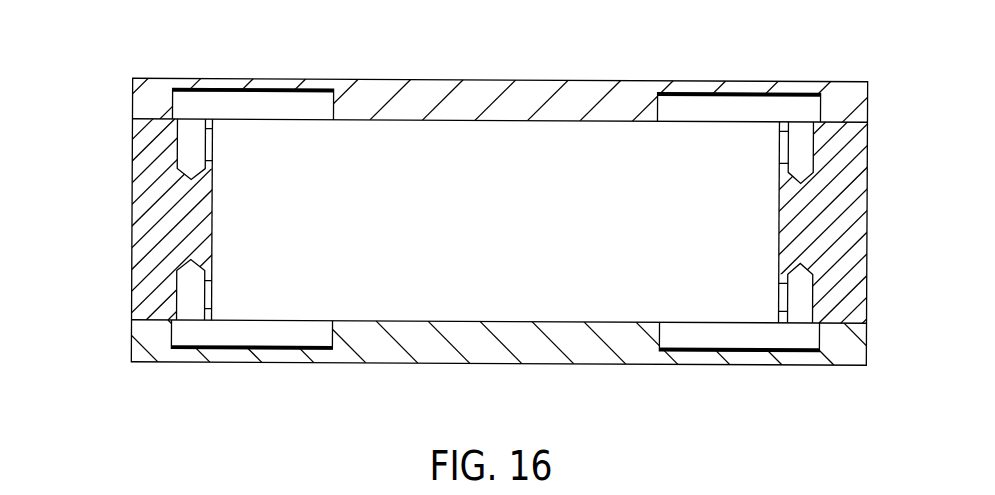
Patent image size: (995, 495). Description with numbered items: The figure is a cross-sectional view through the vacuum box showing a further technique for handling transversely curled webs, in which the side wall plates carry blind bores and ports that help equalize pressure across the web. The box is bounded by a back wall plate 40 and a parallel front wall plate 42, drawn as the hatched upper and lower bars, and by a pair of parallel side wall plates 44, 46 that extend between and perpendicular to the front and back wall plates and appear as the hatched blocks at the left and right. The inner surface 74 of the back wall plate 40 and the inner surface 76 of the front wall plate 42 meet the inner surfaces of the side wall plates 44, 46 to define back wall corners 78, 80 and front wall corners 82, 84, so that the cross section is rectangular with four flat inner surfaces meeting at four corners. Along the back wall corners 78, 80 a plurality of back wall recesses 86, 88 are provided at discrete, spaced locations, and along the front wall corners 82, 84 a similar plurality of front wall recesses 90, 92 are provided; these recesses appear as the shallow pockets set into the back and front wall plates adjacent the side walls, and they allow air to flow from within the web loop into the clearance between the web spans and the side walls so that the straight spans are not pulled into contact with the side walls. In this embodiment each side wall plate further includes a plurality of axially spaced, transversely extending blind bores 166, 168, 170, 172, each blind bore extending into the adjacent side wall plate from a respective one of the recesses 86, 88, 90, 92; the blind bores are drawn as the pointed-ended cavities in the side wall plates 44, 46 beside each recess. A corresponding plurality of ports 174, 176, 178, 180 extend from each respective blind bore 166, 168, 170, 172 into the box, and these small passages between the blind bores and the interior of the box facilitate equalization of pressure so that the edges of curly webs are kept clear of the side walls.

The back wall plate 40 is at (590, 87).
The front wall plate 42 is at (500, 353).
The side wall plate 44 is at (145, 230).
The side wall plate 46 is at (855, 235).
The inner surface of back wall 74 is at (410, 118).
The inner surface of front wall 76 is at (566, 322).
The back wall corner 78 is at (209, 118).
The back wall corner 80 is at (783, 122).
The front wall corner 82 is at (213, 322).
The front wall corner 84 is at (782, 325).
The back wall recess 86 is at (263, 102).
The back wall recess 88 is at (725, 103).
The front wall recess 90 is at (293, 340).
The front wall recess 92 is at (695, 342).
The blind bore 166 is at (190, 130).
The blind bore 168 is at (797, 147).
The blind bore 170 is at (192, 306).
The blind bore 172 is at (806, 308).
The port 174 is at (212, 145).
The port 176 is at (780, 150).
The port 178 is at (212, 293).
The port 180 is at (782, 293).